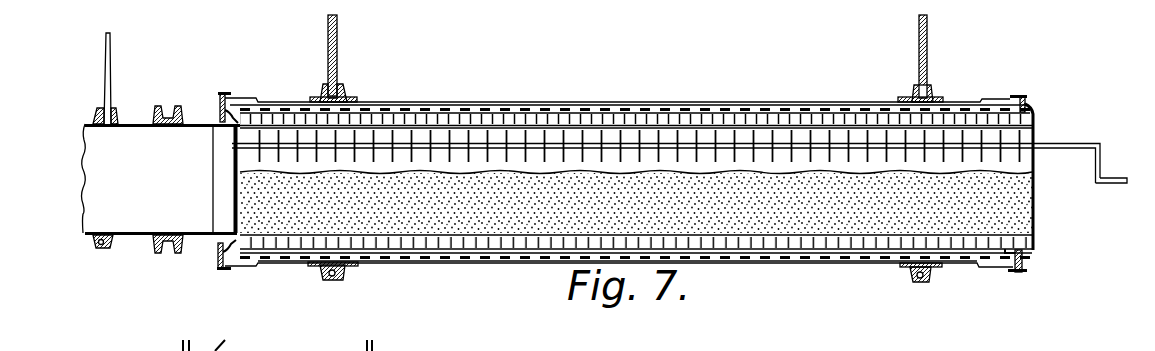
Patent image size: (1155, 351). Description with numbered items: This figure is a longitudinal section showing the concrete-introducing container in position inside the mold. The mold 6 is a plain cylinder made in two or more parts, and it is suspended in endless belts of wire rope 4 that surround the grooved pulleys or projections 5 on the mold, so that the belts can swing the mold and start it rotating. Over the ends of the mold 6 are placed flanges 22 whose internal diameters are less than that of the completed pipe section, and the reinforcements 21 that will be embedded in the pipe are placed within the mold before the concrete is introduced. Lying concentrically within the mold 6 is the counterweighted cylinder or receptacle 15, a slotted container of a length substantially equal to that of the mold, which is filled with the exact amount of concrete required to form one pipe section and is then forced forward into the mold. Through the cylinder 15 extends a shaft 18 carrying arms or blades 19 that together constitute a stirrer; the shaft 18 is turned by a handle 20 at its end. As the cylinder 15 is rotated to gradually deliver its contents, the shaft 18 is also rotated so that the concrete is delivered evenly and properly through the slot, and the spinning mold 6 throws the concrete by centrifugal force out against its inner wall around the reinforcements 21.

The endless belts of wire rope 4 is at (338, 55).
The grooved pulleys or projections 5 is at (343, 92).
The mold 6 is at (428, 105).
The counterweighted cylinder or receptacle 15 is at (825, 232).
The shaft 18 is at (1057, 143).
The arms or blades 19 is at (543, 137).
The handle 20 is at (1110, 185).
The reinforcements 21 is at (725, 113).
The flanges 22 is at (222, 93).